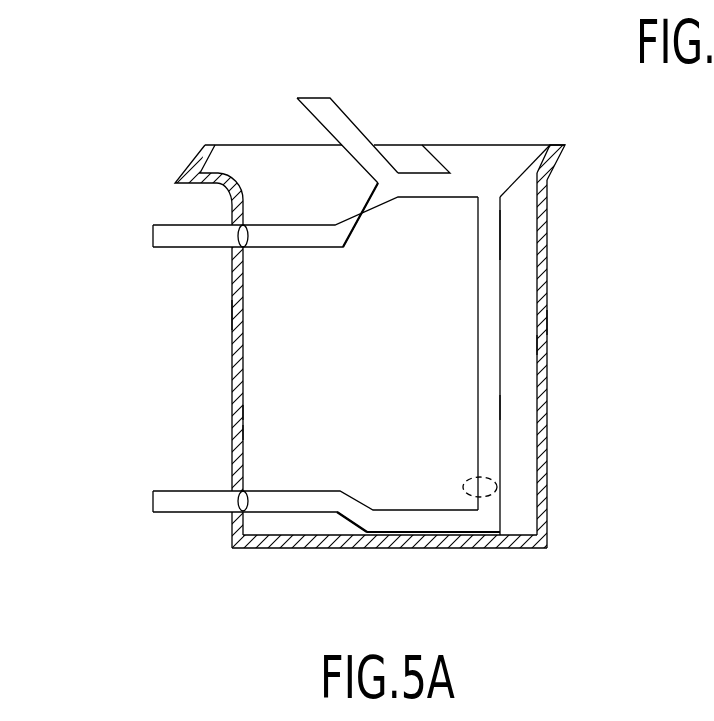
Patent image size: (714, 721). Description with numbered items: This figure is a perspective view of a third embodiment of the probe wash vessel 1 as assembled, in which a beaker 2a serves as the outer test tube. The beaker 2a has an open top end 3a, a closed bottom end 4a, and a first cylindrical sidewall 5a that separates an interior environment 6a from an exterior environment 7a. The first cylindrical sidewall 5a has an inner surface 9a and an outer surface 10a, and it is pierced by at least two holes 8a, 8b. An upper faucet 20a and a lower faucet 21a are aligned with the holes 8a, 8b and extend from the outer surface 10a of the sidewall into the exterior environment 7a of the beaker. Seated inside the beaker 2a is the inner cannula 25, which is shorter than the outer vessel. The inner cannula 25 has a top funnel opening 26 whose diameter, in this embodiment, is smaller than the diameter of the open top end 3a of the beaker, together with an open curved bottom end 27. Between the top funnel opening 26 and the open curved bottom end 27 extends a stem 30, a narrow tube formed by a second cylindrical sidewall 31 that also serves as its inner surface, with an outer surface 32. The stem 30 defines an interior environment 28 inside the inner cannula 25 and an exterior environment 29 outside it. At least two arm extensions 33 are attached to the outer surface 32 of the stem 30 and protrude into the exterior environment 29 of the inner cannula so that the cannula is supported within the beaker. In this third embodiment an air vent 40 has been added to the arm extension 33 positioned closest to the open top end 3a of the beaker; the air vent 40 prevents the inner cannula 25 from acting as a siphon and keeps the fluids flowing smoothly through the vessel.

The probe wash vessel 1 is at (125, 267).
The open top end 3a is at (278, 141).
The air vent 40 is at (348, 114).
The top funnel opening 26 is at (481, 186).
The upper faucet 20a is at (159, 222).
The stem 30 is at (498, 245).
The inner cannula 25 is at (506, 276).
The exterior environment 7a is at (578, 300).
The first cylindrical sidewall 5a is at (240, 315).
The interior environment 6a is at (517, 343).
The interior environment 28 is at (490, 380).
The exterior environment 29 is at (515, 407).
The outer surface 32 is at (498, 442).
The second cylindrical sidewall 31 is at (493, 506).
The open curved bottom end 27 is at (498, 517).
The arm extensions 33 is at (294, 252).
The closed bottom end 4a is at (515, 540).
The hole 8a is at (232, 249).
The hole 8b is at (234, 509).
The beaker 2a is at (242, 352).
The inner surface 9a is at (249, 411).
The outer surface 10a is at (217, 430).
The lower faucet 21a is at (162, 487).